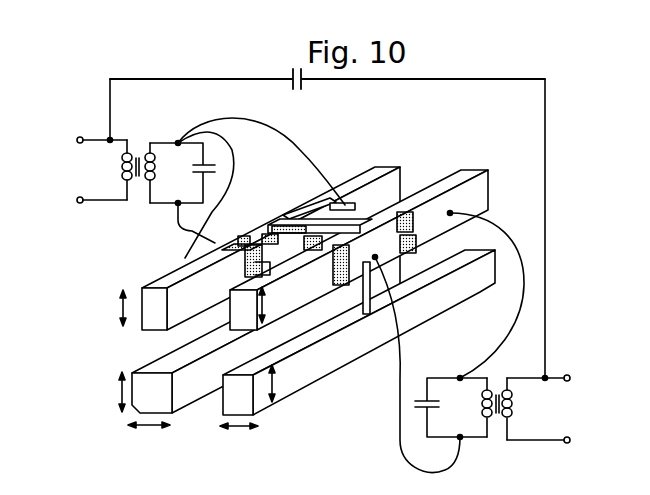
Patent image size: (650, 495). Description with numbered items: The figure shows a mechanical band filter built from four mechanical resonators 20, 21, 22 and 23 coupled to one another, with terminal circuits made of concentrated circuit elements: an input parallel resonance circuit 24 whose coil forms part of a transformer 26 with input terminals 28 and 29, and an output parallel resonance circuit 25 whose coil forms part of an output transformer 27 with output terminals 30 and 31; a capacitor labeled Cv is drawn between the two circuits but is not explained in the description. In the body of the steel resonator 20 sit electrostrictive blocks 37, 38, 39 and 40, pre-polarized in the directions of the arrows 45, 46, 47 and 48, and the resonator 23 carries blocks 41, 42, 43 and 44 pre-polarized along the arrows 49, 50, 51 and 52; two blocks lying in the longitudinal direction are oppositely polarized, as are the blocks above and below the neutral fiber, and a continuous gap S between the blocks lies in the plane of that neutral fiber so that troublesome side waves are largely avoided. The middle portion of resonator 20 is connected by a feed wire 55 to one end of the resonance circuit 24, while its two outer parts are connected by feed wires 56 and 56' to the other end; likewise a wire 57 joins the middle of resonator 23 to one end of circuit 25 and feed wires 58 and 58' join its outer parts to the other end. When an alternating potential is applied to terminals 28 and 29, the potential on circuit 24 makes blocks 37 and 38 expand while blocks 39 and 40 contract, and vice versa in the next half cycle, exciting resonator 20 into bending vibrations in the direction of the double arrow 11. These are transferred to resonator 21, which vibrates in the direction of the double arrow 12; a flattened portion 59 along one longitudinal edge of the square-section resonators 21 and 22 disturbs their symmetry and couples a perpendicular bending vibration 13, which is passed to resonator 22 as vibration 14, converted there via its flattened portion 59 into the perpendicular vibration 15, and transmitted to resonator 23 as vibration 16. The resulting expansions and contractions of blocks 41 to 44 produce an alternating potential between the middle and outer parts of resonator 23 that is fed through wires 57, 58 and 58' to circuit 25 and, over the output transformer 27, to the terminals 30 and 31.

The double arrow 11 is at (112, 308).
The double arrow 12 is at (110, 392).
The double arrow 13 is at (149, 435).
The double arrow 14 is at (239, 435).
The double arrow 15 is at (284, 383).
The double arrow 16 is at (274, 305).
The mechanical resonator 20 is at (167, 283).
The mechanical resonator 21 is at (200, 388).
The mechanical resonator 22 is at (320, 368).
The mechanical resonator 23 is at (466, 174).
The parallel resonance circuit 24 is at (188, 181).
The parallel resonance circuit 25 is at (472, 417).
The transformer 26 is at (138, 182).
The output transformer 27 is at (491, 428).
The input terminal 28 is at (88, 138).
The input terminal 29 is at (88, 199).
The output terminal 30 is at (550, 374).
The output terminal 31 is at (550, 439).
The electrostrictive block 37 is at (241, 236).
The electrostrictive block 38 is at (292, 213).
The electrostrictive block 39 is at (268, 234).
The electrostrictive block 40 is at (335, 232).
The electrostrictive block 41 is at (337, 252).
The electrostrictive block 42 is at (340, 300).
The electrostrictive block 43 is at (402, 205).
The electrostrictive block 44 is at (400, 247).
The arrow 45 is at (220, 251).
The arrow 46 is at (335, 203).
The arrow 47 is at (223, 287).
The arrow 48 is at (300, 250).
The arrow 49 is at (342, 352).
The arrow 50 is at (321, 290).
The arrow 51 is at (440, 211).
The arrow 52 is at (443, 243).
The feed wire 55 is at (178, 228).
The feed wire 56 is at (219, 195).
The feed wire 56' is at (261, 161).
The wire 57 is at (400, 428).
The feed wire 58 is at (371, 391).
The feed wire 58' is at (498, 295).
The flattened portion 59 is at (430, 318).
The gap S is at (372, 244).
The coupling capacitor Cv is at (327, 89).